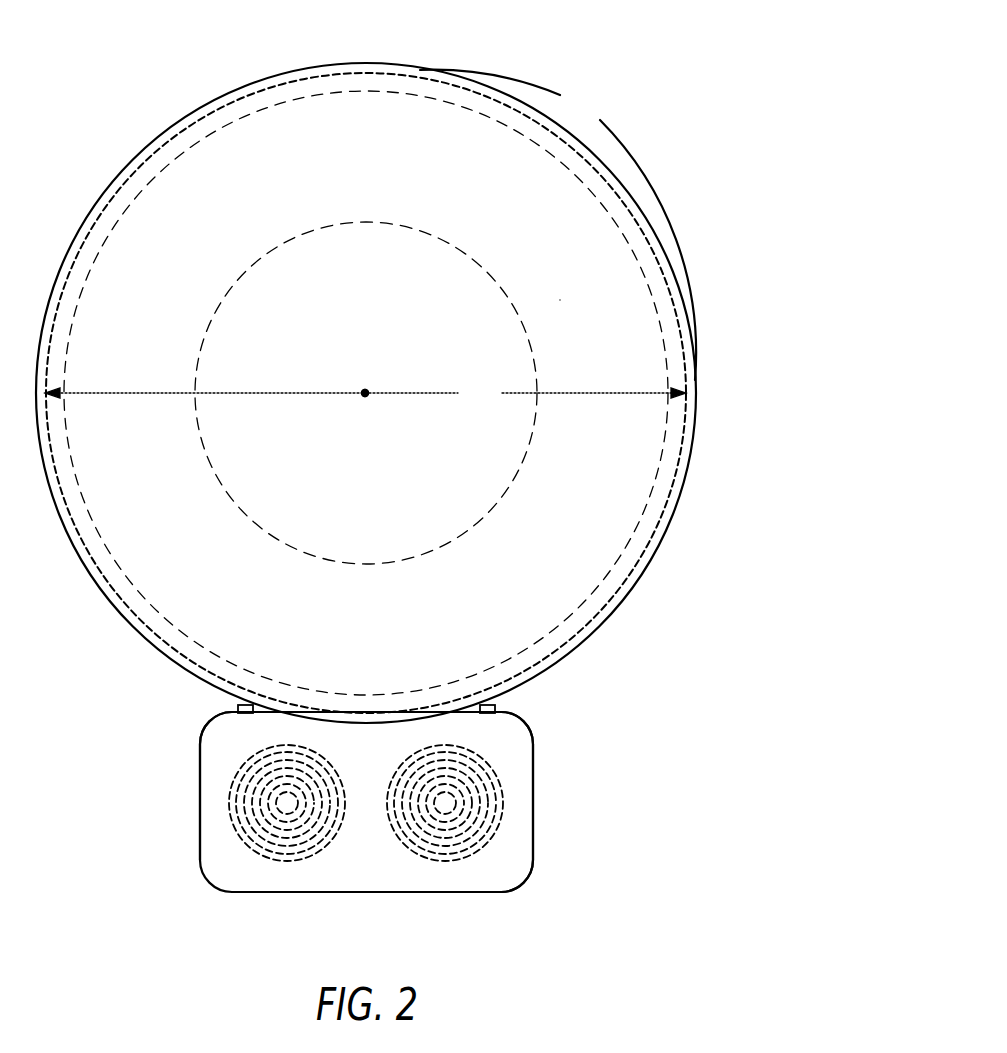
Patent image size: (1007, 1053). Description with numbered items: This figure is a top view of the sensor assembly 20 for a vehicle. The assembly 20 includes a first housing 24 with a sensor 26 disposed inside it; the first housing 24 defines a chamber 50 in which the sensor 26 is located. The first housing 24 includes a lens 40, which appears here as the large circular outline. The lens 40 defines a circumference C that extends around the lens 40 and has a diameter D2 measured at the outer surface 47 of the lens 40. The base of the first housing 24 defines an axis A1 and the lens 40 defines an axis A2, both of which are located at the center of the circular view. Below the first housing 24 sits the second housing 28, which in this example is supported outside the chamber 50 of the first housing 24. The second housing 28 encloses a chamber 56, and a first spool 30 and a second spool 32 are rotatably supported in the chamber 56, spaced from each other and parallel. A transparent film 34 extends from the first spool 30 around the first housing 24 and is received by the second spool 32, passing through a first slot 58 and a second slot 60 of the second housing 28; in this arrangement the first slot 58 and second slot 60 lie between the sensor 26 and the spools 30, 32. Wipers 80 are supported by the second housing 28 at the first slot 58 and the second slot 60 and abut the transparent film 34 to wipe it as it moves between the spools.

The assembly 20 is at (676, 70).
The first housing 24 is at (218, 104).
The sensor 26 is at (444, 546).
The second housing 28 is at (533, 800).
The first spool 30 is at (287, 806).
The second spool 32 is at (445, 806).
The transparent film 34 is at (176, 127).
The lens 40 is at (210, 124).
The outer surface 47 is at (648, 213).
The chamber 50 is at (613, 328).
The chamber 56 is at (520, 846).
The first slot 58 is at (257, 716).
The second slot 60 is at (478, 722).
The wipers 80 is at (240, 712).
The circumference C is at (490, 92).
The axis A1 is at (366, 390).
The axis A2 is at (365, 393).
The diameter D2 is at (365, 393).